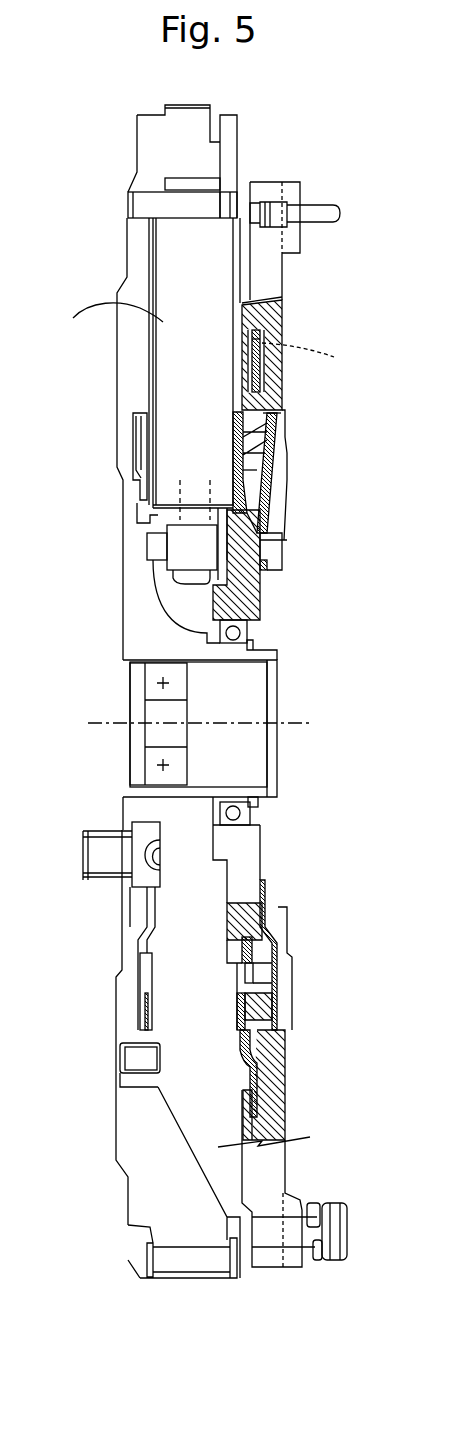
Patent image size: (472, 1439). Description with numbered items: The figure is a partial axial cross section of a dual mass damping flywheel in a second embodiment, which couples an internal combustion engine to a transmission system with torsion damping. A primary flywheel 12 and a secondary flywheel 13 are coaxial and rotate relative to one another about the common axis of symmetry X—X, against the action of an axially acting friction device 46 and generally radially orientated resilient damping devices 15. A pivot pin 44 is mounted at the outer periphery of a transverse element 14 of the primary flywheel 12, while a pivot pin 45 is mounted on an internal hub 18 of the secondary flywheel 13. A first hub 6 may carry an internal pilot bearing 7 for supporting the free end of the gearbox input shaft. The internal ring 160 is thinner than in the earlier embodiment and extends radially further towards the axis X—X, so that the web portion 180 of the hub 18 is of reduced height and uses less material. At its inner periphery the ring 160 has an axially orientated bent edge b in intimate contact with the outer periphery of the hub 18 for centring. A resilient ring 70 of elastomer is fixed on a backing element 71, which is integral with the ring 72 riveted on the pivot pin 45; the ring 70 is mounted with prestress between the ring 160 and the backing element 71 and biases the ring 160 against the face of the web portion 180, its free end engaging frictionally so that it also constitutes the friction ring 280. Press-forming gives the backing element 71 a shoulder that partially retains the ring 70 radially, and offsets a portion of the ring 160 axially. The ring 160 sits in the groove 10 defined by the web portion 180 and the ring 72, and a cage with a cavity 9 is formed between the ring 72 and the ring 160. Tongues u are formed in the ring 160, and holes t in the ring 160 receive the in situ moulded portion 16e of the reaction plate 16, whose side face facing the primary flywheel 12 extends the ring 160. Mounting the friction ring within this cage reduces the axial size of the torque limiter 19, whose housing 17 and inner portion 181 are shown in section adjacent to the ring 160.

The primary flywheel 12 is at (112, 273).
The pivot pin 44 is at (137, 197).
The resilient damping device 15 is at (105, 314).
The transverse element 14 is at (126, 437).
The reaction plate 16 is at (222, 290).
The bearing housing 17 is at (285, 325).
The portion of the plate 16e is at (268, 380).
The holes t is at (303, 354).
The internal ring 160 is at (233, 421).
The friction ring 280 is at (233, 449).
The sleeve bottom 181 is at (233, 490).
The resilient ring 70 is at (275, 437).
The ring 72 is at (277, 468).
The groove 10 is at (280, 495).
The bent edge b is at (266, 523).
The pivot pin 45 is at (177, 548).
The internal hub 18 is at (247, 602).
The first hub 6 is at (273, 660).
The internal pilot bearing 7 is at (133, 765).
The axis of axial symmetry X is at (198, 727).
The torque limiter 19 is at (282, 913).
The web portion 180 is at (239, 955).
The tongues u is at (245, 982).
The backing element 71 is at (277, 1012).
The cavity 9 is at (270, 973).
The secondary flywheel 13 is at (303, 987).
The axially acting friction device 46 is at (138, 988).